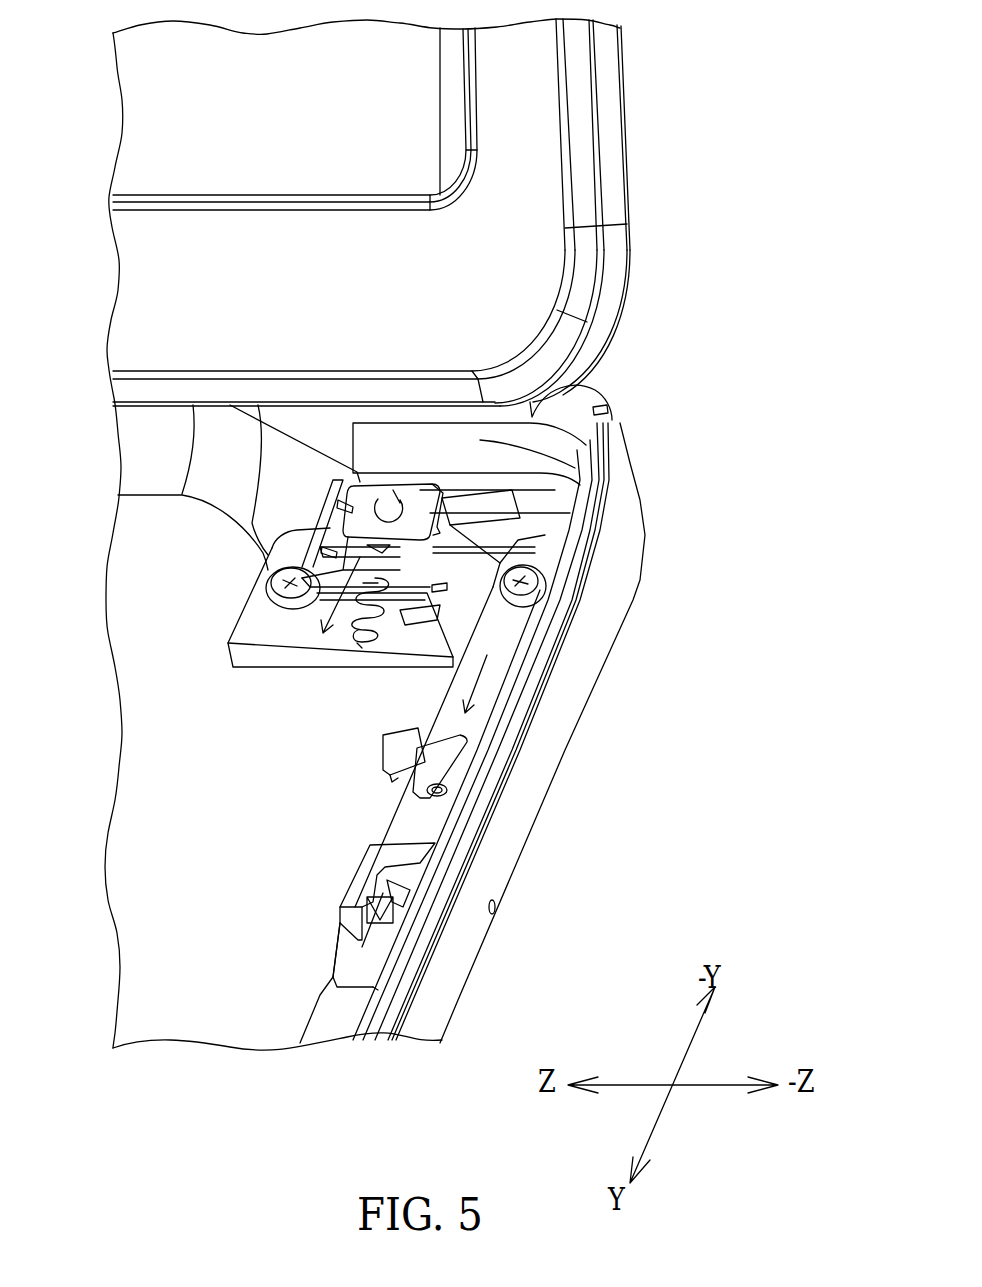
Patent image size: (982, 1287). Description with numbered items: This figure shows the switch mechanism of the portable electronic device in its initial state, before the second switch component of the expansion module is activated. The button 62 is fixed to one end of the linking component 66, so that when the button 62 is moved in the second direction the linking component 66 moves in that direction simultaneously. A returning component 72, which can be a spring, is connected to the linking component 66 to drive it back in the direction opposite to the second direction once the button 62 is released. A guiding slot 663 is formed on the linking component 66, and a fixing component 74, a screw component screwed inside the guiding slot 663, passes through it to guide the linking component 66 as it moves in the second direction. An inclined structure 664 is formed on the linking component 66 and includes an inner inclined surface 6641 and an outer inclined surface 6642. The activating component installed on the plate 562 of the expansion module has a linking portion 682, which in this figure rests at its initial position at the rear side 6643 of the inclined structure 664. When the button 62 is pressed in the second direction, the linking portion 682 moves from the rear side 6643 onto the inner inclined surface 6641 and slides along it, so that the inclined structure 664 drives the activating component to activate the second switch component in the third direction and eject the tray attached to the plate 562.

The button 62 is at (428, 488).
The linking component 66 is at (492, 625).
The returning component 72 is at (360, 647).
The fixing component 74 is at (437, 782).
The plate 562 is at (441, 998).
The guiding slot 663 is at (452, 760).
The inclined structure 664 is at (427, 968).
The inner inclined surface 6641 is at (385, 890).
The outer inclined surface 6642 is at (410, 890).
The rear side 6643 is at (380, 937).
The linking portion 682 is at (390, 920).